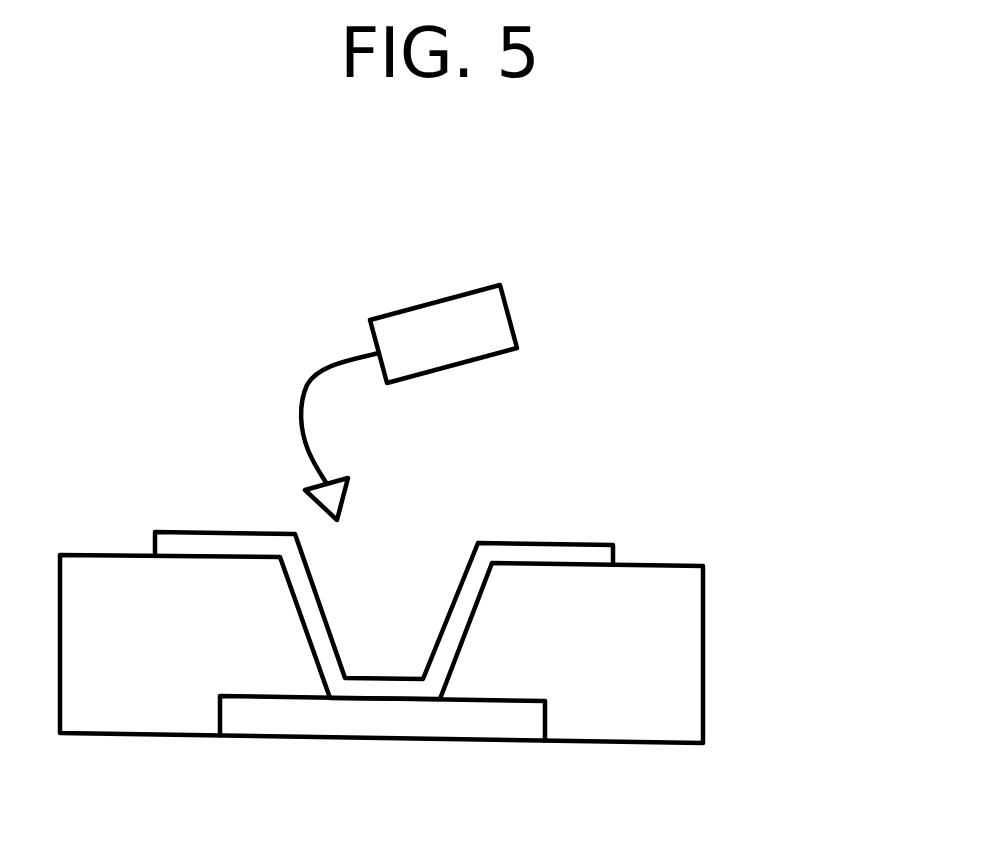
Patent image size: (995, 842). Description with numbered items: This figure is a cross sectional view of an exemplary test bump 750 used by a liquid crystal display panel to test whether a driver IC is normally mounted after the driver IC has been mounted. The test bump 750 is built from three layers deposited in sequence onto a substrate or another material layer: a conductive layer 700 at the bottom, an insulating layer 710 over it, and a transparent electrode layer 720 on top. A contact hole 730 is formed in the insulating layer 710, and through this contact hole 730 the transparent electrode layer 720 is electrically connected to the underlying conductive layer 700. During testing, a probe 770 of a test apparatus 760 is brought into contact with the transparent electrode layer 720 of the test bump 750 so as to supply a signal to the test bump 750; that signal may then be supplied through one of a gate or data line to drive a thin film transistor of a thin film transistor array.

The conductive layer 700 is at (532, 718).
The insulating layer 710 is at (687, 602).
The transparent electrode layer 720 is at (566, 542).
The contact hole 730 is at (378, 608).
The test bump 750 is at (673, 535).
The test apparatus 760 is at (512, 317).
The probe 770 is at (318, 502).